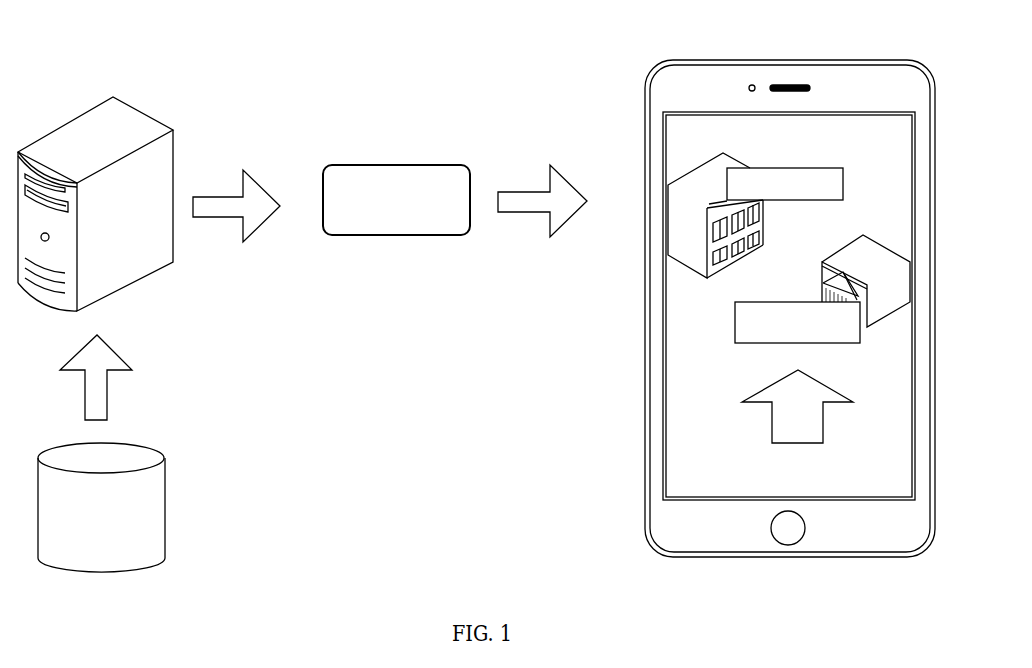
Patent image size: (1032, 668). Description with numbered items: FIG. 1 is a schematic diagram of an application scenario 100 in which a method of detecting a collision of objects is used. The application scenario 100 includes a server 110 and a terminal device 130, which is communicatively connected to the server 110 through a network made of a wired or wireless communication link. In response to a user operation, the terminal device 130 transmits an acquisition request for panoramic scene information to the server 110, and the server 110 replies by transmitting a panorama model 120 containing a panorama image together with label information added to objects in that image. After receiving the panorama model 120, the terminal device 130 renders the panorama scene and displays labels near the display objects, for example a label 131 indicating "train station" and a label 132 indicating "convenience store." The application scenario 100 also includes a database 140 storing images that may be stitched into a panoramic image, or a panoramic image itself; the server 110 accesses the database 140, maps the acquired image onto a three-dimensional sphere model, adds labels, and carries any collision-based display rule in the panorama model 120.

The application scenario 100 is at (102, 45).
The server 110 is at (95, 210).
The panorama model 120 is at (420, 165).
The terminal device 130 is at (760, 309).
The label 131 is at (803, 168).
The label 132 is at (805, 302).
The database 140 is at (131, 507).